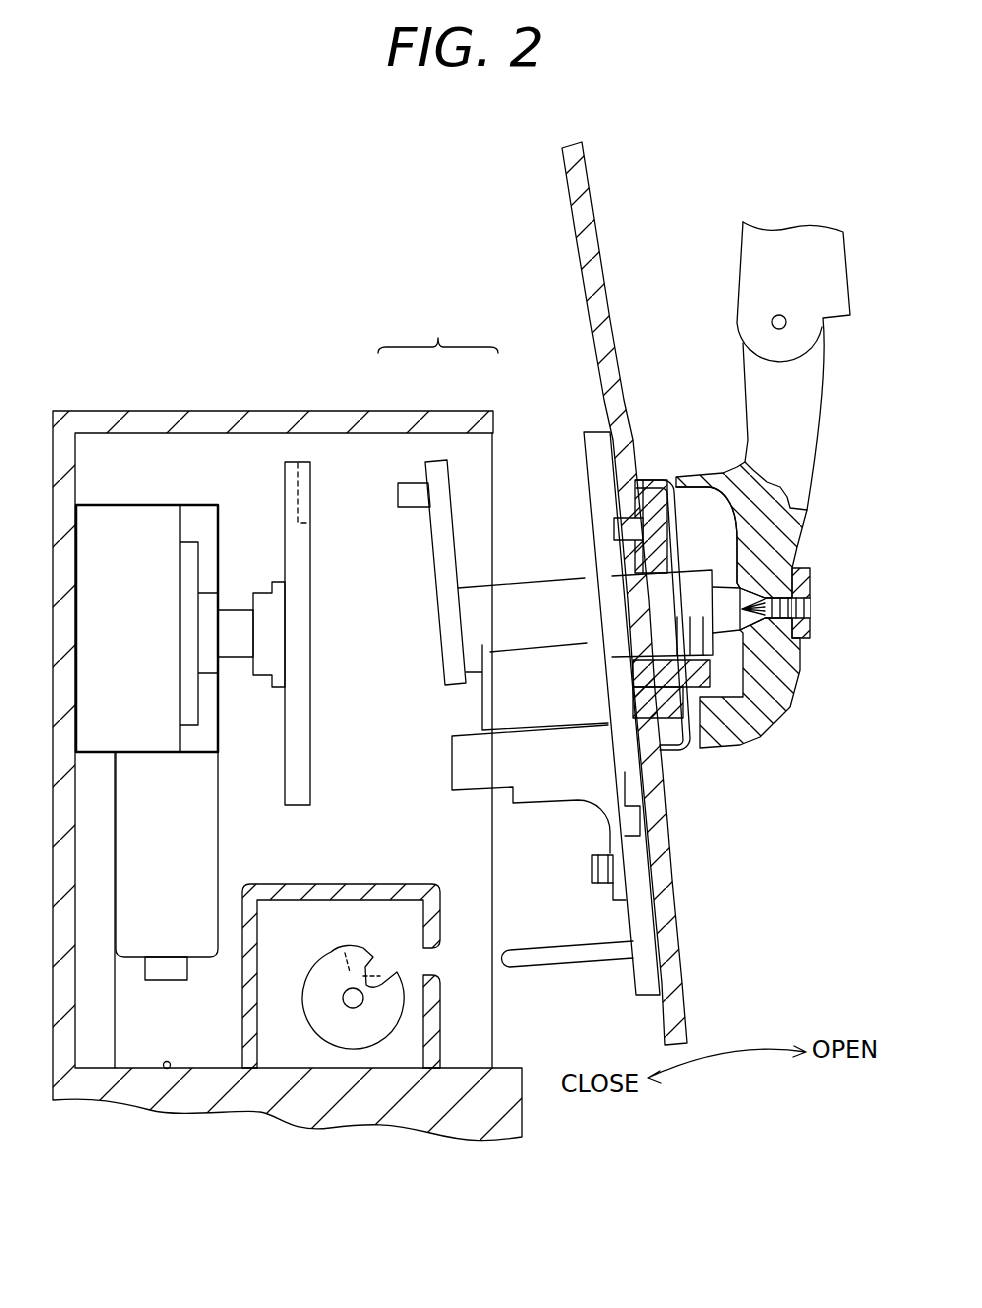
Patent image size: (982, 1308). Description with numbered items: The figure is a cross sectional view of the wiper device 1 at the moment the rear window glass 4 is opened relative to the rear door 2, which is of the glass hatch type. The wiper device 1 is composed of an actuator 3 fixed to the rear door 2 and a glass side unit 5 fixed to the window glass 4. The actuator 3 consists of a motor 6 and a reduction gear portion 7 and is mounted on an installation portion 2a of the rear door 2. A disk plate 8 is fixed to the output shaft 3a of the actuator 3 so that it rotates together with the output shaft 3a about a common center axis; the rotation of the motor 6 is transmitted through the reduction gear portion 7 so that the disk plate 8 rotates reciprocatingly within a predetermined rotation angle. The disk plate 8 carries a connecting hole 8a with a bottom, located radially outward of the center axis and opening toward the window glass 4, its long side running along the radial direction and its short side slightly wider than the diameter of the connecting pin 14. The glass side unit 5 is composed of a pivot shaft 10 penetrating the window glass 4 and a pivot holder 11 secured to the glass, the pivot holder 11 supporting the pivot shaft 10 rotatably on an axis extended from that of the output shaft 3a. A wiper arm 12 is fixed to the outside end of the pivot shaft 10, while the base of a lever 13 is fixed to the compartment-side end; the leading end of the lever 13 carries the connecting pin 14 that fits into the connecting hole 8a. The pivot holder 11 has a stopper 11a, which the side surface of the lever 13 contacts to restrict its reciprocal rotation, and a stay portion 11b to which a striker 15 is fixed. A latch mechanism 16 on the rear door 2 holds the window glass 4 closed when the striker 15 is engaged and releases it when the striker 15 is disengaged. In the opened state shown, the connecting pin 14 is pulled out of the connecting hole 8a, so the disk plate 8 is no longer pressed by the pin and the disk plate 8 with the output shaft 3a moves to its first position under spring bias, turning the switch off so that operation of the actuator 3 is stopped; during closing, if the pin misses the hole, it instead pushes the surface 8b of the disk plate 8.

The wiper device 1 is at (438, 329).
The rear door 2 is at (518, 1098).
The installation portion 2a is at (166, 1069).
The actuator 3 is at (185, 489).
The output shaft 3a is at (233, 659).
The window glass 4 is at (588, 170).
The glass side unit 5 is at (571, 448).
The motor 6 is at (212, 943).
The reduction gear portion 7 is at (116, 506).
The disk plate 8 is at (288, 787).
The connecting hole 8a is at (310, 506).
The surface 8b is at (312, 716).
The pivot shaft 10 is at (738, 642).
The pivot holder 11 is at (586, 486).
The stopper 11a is at (452, 748).
The stay portion 11b is at (609, 838).
The wiper arm 12 is at (822, 444).
The lever 13 is at (447, 645).
The connecting pin 14 is at (412, 507).
The striker 15 is at (577, 966).
The latch mechanism 16 is at (332, 961).